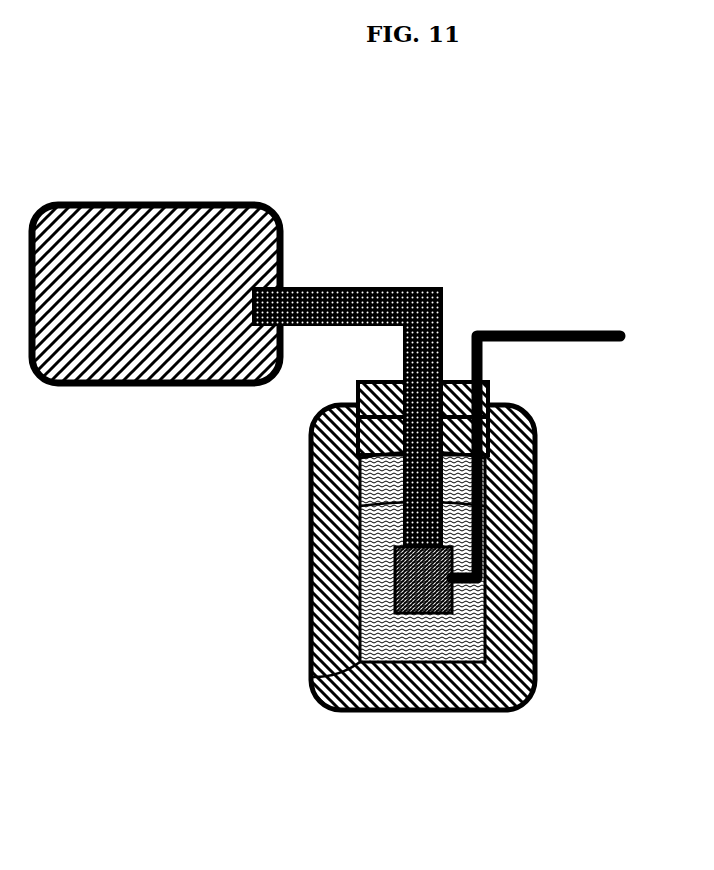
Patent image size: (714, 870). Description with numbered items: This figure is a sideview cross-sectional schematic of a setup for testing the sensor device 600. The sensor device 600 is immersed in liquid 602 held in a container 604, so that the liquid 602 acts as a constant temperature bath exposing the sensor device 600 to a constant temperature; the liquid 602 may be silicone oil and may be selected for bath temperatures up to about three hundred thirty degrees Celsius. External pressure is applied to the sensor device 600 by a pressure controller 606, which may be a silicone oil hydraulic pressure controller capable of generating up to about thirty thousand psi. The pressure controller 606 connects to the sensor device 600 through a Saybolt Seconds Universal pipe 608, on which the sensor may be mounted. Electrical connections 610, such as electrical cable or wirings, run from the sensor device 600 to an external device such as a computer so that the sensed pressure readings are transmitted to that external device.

The sensor device 600 is at (490, 540).
The liquid 602 is at (311, 678).
The container 604 is at (311, 572).
The pressure controller 606 is at (146, 383).
The Saybolt Seconds Universal (SSU) pipe 608 is at (340, 327).
The electrical connections 610 is at (538, 331).